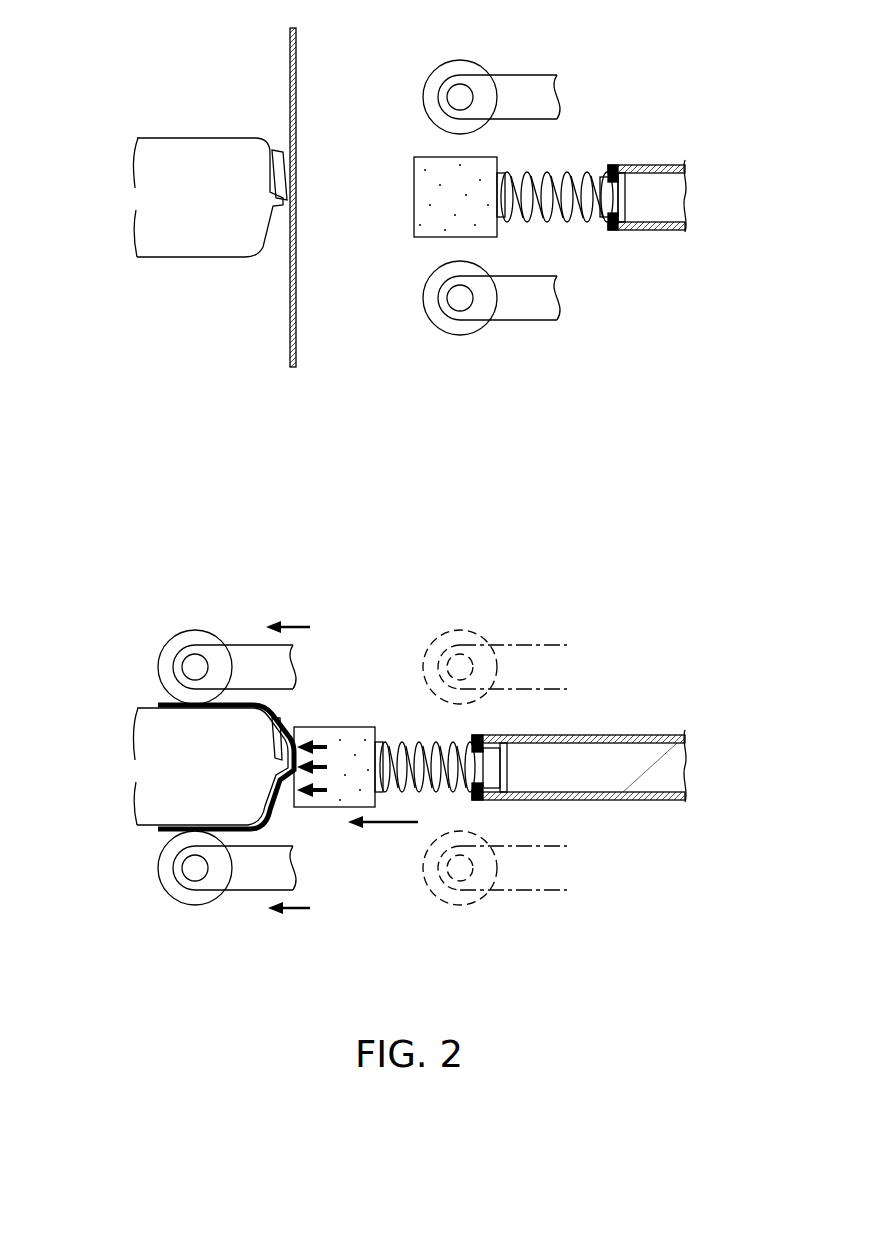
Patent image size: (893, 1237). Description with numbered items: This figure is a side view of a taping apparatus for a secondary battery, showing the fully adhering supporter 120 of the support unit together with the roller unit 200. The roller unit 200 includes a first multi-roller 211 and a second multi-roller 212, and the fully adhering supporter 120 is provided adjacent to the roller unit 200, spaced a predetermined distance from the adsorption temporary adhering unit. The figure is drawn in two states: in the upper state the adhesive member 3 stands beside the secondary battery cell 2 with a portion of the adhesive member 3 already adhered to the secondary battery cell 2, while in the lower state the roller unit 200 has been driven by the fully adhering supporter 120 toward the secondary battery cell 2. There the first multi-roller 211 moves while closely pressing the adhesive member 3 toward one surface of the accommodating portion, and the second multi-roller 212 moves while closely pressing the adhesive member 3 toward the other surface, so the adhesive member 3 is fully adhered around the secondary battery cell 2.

The secondary battery cell 2 is at (191, 132).
The adhesive member 3 is at (290, 50).
The fully adhering supporter 120 is at (656, 150).
The roller unit 200 is at (388, 534).
The first multi-roller 211 is at (512, 102).
The second multi-roller 212 is at (515, 308).